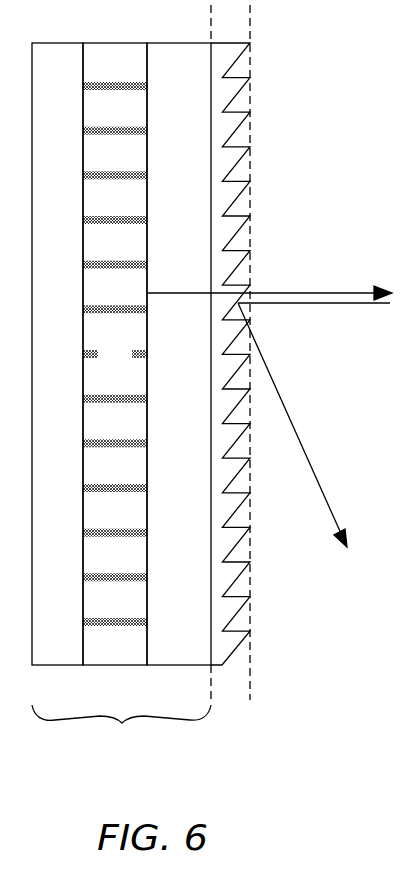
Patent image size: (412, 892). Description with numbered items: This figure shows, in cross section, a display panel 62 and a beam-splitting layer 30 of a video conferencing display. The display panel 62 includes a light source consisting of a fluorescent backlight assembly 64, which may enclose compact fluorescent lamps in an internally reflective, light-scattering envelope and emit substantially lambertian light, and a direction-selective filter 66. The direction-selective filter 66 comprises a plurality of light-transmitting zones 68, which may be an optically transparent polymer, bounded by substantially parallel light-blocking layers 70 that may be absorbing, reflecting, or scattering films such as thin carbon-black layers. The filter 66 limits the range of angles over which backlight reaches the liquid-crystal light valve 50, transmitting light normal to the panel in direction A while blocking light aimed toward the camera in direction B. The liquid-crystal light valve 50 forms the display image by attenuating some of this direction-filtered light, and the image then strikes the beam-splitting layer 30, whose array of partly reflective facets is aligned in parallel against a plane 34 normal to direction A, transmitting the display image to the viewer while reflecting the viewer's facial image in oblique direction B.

The beam-splitting layer 30 is at (222, 379).
The plane 34 is at (250, 24).
The liquid-crystal light valve 50 is at (170, 364).
The display panel 62 is at (121, 398).
The fluorescent backlight assembly 64 is at (48, 364).
The direction-selective filter 66 is at (119, 354).
The light-transmitting zones 68 is at (94, 197).
The light-blocking layers 70 is at (147, 175).